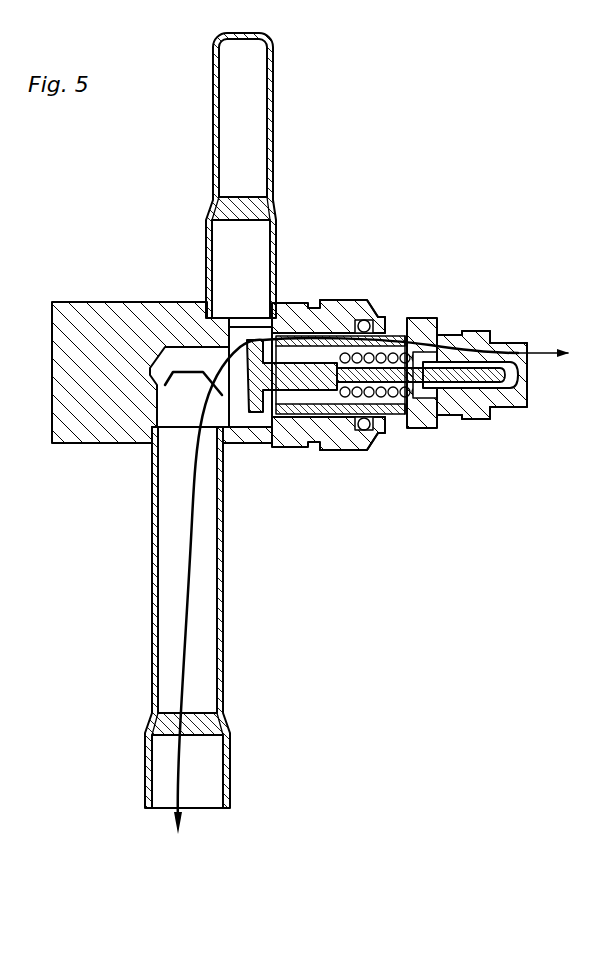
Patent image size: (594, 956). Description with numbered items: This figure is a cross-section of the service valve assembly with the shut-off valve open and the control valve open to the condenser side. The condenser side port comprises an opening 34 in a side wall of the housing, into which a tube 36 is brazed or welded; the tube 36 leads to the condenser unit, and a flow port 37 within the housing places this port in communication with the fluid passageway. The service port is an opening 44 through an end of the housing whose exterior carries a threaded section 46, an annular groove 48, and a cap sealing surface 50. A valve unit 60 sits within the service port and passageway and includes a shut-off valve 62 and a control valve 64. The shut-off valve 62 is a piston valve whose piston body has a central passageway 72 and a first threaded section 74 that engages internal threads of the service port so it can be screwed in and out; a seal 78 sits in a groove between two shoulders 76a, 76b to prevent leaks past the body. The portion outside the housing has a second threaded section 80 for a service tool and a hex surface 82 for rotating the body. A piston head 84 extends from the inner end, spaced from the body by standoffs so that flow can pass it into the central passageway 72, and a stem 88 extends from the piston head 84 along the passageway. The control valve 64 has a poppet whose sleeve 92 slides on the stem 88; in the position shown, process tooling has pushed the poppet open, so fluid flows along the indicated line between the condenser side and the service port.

The opening 34 is at (225, 445).
The tube 36 is at (224, 548).
The flow port 37 is at (207, 360).
The opening 44 is at (388, 318).
The threaded section 46 is at (330, 302).
The annular groove 48 is at (318, 447).
The cap sealing surface 50 is at (383, 440).
The valve unit 60 is at (456, 312).
The shut-off valve 62 is at (437, 432).
The control valve 64 is at (446, 404).
The central passageway 72 is at (507, 392).
The first threaded section 74 is at (292, 302).
The shoulder 76a is at (352, 447).
The shoulder 76b is at (367, 432).
The seal 78 is at (350, 318).
The second threaded section 80 is at (482, 331).
The hex surface 82 is at (453, 317).
The piston head 84 is at (253, 405).
The stem 88 is at (493, 370).
The sleeve 92 is at (481, 390).